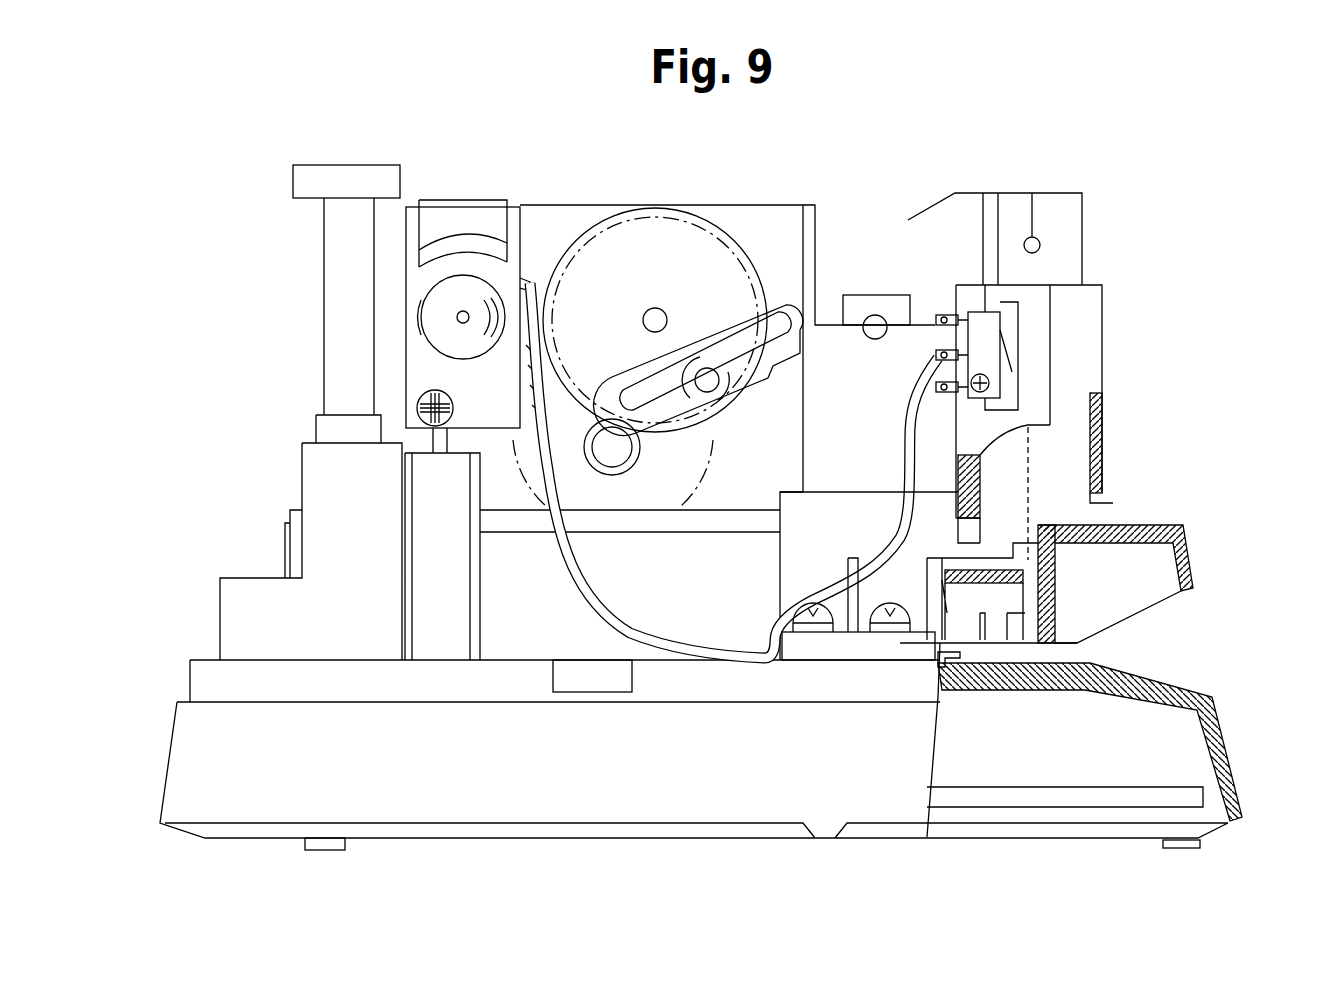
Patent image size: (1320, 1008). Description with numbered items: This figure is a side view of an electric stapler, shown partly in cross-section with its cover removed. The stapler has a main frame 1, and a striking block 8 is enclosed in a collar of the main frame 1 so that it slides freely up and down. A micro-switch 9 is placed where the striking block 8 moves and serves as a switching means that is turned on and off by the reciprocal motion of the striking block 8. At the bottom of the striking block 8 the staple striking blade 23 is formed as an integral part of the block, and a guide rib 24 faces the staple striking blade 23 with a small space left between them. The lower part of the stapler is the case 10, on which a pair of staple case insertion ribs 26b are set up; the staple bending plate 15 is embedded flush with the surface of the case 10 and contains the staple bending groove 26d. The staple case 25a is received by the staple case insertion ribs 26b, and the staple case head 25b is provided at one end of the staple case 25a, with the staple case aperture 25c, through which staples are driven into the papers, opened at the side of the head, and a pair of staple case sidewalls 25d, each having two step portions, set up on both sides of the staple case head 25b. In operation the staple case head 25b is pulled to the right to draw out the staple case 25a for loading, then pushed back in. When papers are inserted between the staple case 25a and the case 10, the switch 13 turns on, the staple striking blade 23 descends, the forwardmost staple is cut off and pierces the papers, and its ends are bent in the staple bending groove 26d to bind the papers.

The main frame 1 is at (770, 228).
The striking block 8 is at (1058, 217).
The micro-switch 9 is at (985, 335).
The case 10 is at (498, 693).
The switch 13 is at (925, 585).
The staple bending plate 15 is at (998, 673).
The staple striking blade 23 is at (1033, 462).
The guide rib 24 is at (975, 458).
The staple case 25a is at (973, 582).
The staple case head 25b is at (1060, 533).
The staple case aperture 25c is at (1055, 590).
The staple case sidewalls 25d is at (995, 540).
The staple case insertion ribs 26b is at (902, 632).
The staple bending groove 26d is at (1042, 667).